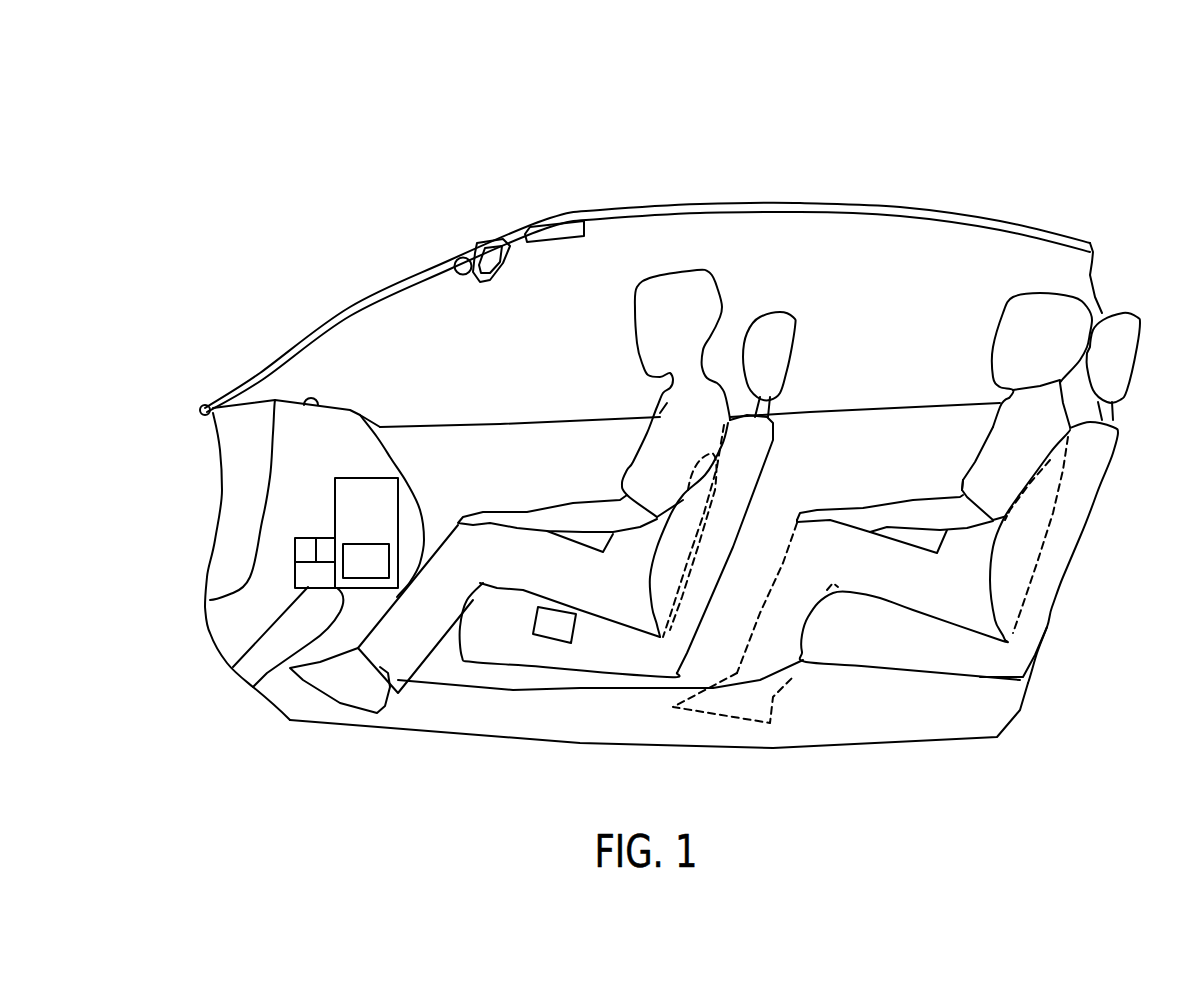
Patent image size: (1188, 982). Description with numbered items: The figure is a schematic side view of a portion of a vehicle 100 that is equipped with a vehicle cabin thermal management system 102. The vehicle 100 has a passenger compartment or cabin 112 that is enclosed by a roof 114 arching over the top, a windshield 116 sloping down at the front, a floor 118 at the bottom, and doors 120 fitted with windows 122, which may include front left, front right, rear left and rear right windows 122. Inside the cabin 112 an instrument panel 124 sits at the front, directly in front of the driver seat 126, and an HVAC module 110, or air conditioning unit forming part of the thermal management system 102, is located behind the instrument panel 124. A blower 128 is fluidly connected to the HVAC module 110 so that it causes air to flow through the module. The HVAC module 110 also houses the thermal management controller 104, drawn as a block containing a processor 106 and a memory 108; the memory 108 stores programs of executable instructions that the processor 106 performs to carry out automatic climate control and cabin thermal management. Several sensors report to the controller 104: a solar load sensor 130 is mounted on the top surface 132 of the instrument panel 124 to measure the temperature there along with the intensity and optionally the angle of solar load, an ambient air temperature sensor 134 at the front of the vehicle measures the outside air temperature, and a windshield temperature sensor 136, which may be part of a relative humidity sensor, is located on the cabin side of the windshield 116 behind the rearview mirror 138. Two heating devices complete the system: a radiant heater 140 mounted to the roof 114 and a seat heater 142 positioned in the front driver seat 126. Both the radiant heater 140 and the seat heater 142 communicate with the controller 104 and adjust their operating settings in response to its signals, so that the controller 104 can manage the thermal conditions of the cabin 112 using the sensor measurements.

The vehicle 100 is at (723, 126).
The vehicle cabin thermal management system 102 is at (408, 323).
The thermal management controller 104 is at (295, 575).
The processor 106 is at (295, 550).
The memory 108 is at (328, 543).
The HVAC module 110 is at (256, 689).
The cabin 112 is at (843, 240).
The roof 114 is at (812, 202).
The windshield 116 is at (373, 290).
The floor 118 is at (767, 750).
The doors 120 is at (860, 410).
The windows 122 is at (633, 273).
The instrument panel 124 is at (353, 403).
The driver seat 126 is at (510, 662).
The blower 128 is at (237, 670).
The solar load sensor 130 is at (312, 396).
The top surface 132 is at (275, 397).
The ambient air temperature sensor 134 is at (204, 404).
The windshield temperature sensor 136 is at (463, 257).
The rearview mirror 138 is at (506, 240).
The radiant heater 140 is at (557, 236).
The seat heater 142 is at (551, 643).